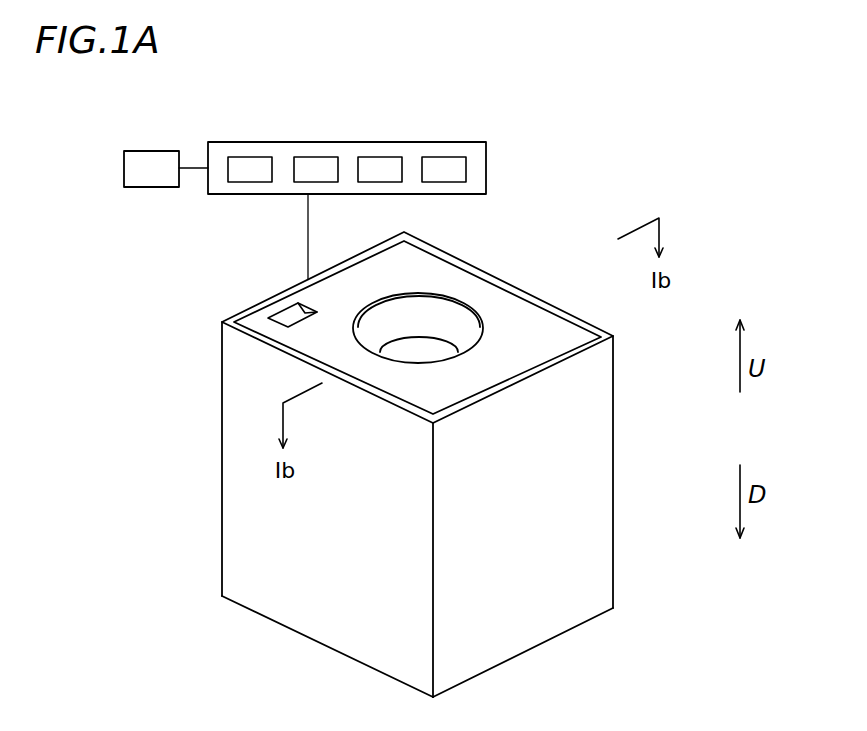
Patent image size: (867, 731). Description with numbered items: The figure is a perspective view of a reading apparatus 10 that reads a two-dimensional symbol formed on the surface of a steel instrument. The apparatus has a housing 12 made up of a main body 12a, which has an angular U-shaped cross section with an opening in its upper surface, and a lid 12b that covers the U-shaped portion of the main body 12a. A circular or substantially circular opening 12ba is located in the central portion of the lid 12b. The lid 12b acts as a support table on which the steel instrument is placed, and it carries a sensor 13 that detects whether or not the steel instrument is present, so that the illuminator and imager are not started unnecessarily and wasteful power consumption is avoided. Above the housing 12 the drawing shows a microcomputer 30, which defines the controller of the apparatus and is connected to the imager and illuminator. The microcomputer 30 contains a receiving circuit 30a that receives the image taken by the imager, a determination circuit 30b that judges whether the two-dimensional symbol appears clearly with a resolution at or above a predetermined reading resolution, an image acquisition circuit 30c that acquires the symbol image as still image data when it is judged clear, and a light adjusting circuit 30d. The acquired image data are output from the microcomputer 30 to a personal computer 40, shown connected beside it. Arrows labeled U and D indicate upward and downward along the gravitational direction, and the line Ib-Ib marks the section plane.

The reading apparatus 10 is at (630, 157).
The housing 12 is at (462, 452).
The main body 12a is at (598, 503).
The lid 12b is at (424, 315).
The opening 12ba is at (456, 320).
The sensor 13 is at (288, 316).
The microcomputer 30 is at (477, 142).
The receiving circuit 30a is at (247, 157).
The determination circuit 30b is at (314, 157).
The image acquisition circuit 30c is at (376, 157).
The light adjusting circuit 30d is at (436, 157).
The personal computer 40 is at (147, 151).